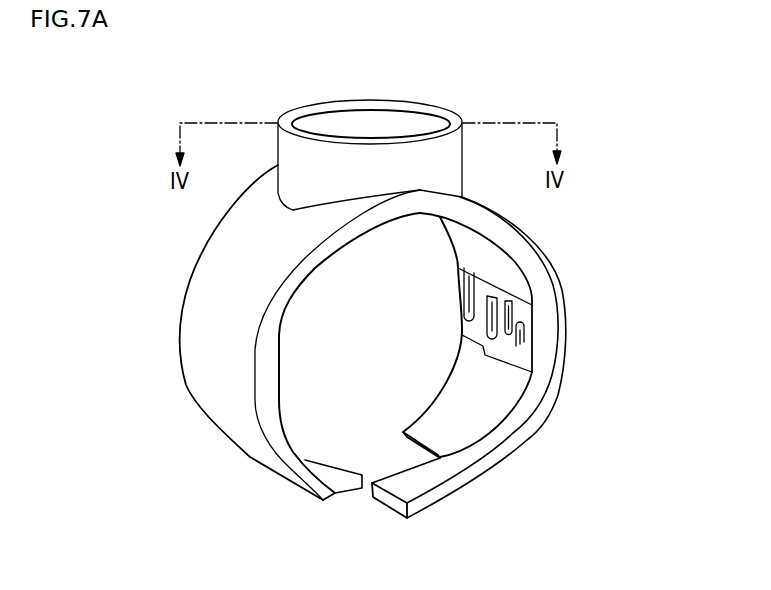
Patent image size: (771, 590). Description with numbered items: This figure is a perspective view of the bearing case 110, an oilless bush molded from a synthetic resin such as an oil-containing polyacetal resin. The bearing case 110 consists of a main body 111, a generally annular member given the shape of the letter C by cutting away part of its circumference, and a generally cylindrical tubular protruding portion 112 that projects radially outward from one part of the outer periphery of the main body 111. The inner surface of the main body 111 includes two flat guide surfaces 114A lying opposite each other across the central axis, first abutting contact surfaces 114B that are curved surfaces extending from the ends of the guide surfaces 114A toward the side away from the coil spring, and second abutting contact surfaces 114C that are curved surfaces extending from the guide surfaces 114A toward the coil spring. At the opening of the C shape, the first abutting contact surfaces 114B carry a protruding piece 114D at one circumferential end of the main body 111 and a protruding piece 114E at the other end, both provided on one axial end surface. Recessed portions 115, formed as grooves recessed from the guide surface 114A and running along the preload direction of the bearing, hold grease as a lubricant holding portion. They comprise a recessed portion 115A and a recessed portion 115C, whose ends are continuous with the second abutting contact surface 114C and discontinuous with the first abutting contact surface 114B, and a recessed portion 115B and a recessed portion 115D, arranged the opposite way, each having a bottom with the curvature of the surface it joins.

The bearing case 110 is at (233, 105).
The main body 111 is at (548, 327).
The tubular protruding portion 112 is at (432, 158).
The guide surfaces 114A is at (502, 355).
The first abutting contact surfaces 114B is at (483, 432).
The second abutting contact surfaces 114C is at (455, 230).
The protruding piece 114D is at (330, 458).
The protruding piece 114E is at (430, 490).
The recessed portions 115 is at (660, 137).
The recessed portion 115A is at (472, 275).
The recessed portion 115B is at (495, 296).
The recessed portion 115C is at (511, 306).
The recessed portion 115D is at (522, 322).